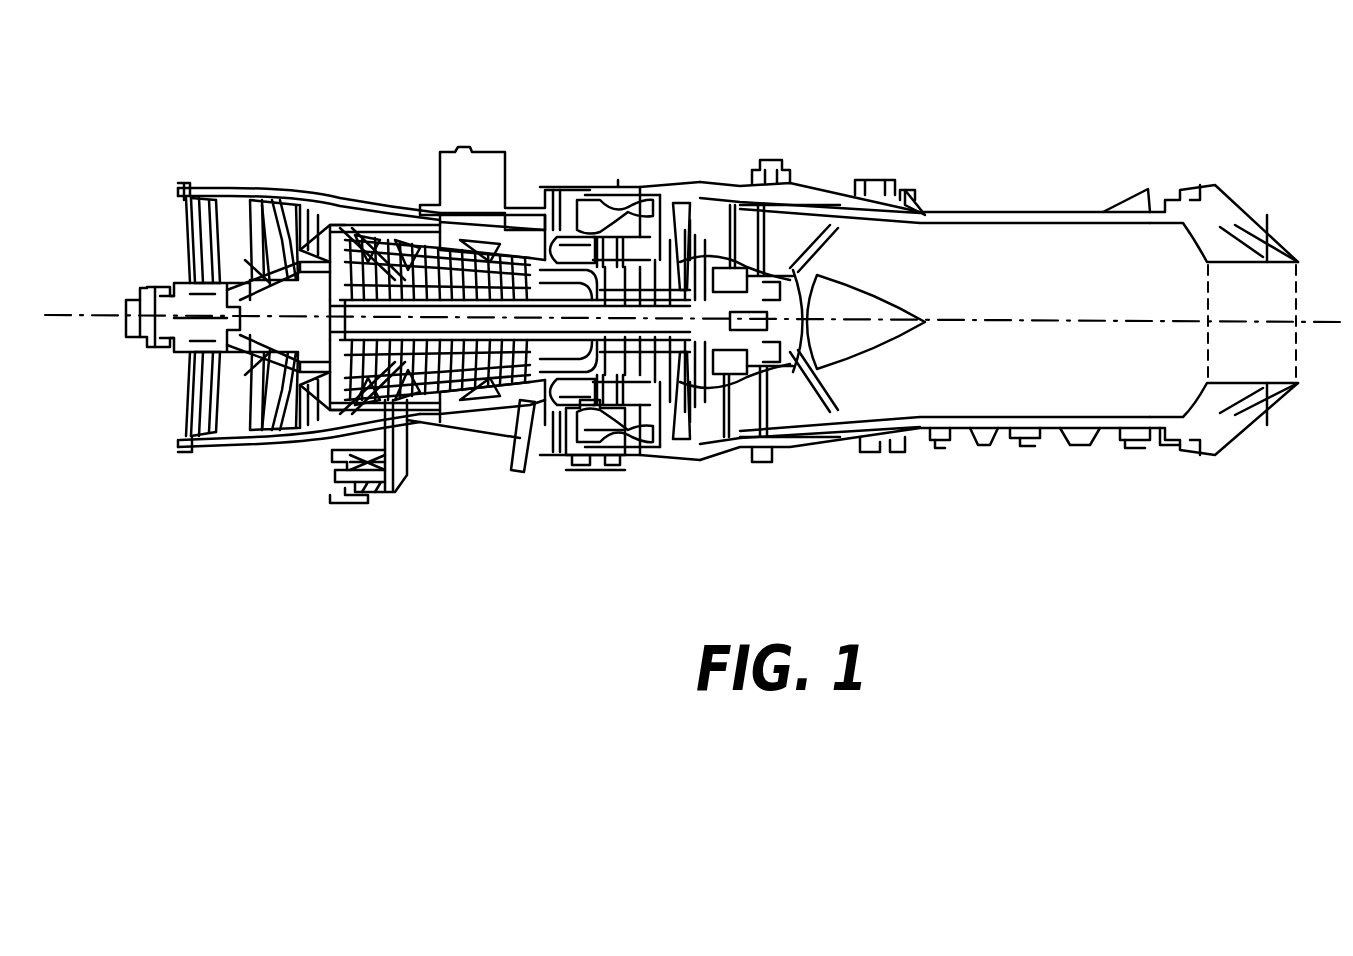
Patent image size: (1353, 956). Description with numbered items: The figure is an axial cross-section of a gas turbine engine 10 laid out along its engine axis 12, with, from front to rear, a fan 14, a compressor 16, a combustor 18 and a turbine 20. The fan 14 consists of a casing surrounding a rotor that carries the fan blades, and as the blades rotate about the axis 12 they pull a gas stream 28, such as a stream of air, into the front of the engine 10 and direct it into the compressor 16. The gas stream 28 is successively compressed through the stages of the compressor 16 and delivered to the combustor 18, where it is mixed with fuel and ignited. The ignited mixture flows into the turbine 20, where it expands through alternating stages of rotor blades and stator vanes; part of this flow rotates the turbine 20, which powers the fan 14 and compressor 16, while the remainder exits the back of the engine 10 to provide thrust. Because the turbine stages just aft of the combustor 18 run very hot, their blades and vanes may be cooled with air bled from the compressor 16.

The gas turbine engine 10 is at (525, 598).
The engine axis 12 is at (122, 315).
The fan 14 is at (262, 185).
The compressor 16 is at (543, 190).
The combustor 18 is at (598, 188).
The turbine 20 is at (598, 188).
The gas stream 28 is at (170, 241).